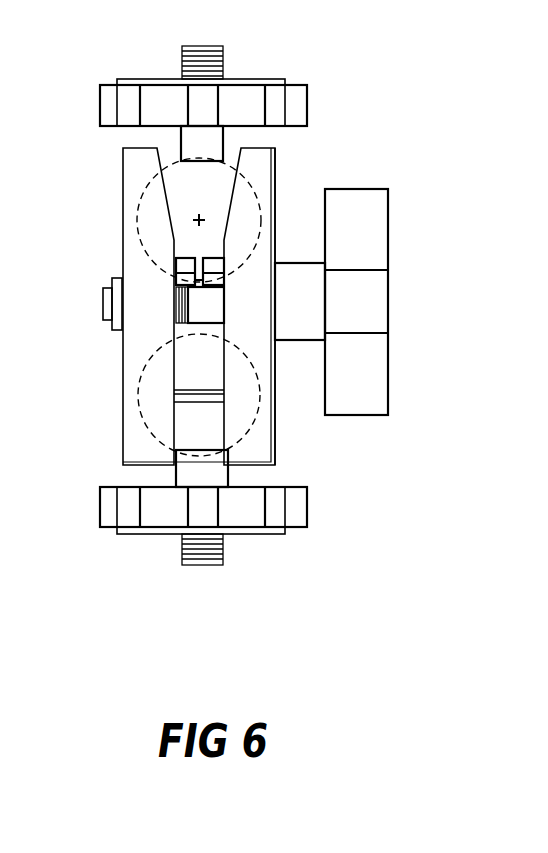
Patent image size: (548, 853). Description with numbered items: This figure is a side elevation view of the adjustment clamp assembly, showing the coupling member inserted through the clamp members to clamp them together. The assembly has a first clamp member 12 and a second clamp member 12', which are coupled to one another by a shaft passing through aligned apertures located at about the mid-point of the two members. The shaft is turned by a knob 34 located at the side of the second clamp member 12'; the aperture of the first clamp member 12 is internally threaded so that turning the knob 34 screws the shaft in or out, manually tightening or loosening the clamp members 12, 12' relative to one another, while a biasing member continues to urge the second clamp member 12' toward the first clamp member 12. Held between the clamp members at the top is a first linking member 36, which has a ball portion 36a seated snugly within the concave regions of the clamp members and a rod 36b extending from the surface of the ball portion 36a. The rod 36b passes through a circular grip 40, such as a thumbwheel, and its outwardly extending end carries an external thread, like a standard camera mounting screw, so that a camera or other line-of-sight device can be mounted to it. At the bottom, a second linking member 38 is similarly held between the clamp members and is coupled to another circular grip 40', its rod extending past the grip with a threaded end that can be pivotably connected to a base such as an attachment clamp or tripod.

The first clamp member 12 is at (160, 306).
The second clamp member 12' is at (341, 305).
The knob 34 is at (389, 230).
The first linking member 36 is at (215, 133).
The ball portion 36a is at (185, 193).
The rod 36b is at (223, 56).
The second linking member 38 is at (216, 479).
The circular grip 40 is at (162, 98).
The circular grip 40' is at (162, 516).